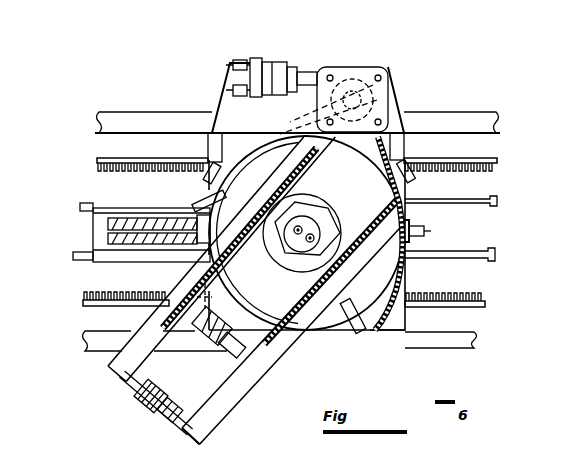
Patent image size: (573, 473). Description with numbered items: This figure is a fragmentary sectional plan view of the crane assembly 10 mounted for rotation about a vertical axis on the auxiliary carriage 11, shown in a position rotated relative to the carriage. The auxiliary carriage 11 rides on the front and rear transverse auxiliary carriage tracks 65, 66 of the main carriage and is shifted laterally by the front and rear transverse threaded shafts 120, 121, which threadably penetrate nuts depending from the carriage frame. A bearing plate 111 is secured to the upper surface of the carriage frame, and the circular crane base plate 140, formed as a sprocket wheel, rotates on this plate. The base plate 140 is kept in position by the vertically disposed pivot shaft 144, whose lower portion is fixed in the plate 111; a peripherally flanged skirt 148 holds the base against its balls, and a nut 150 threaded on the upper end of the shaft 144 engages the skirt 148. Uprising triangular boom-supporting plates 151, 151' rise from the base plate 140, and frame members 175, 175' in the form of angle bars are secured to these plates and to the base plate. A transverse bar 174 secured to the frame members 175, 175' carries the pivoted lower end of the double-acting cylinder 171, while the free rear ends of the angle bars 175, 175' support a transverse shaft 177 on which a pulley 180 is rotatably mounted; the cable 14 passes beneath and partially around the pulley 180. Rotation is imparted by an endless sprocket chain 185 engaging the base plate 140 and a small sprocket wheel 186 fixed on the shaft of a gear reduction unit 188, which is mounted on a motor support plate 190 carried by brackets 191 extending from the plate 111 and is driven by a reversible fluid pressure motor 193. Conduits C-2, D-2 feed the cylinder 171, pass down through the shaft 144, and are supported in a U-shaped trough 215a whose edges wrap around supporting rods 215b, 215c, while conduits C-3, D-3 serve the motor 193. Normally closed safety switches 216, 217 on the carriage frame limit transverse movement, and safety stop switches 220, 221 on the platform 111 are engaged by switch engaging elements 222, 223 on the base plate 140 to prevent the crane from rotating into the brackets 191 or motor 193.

The crane assembly 10 is at (227, 425).
The auxiliary carriage 11 is at (413, 284).
The cable 14 is at (158, 406).
The front auxiliary carriage track 65 is at (129, 118).
The rear auxiliary carriage track 66 is at (80, 334).
The bearing plate 111 is at (406, 317).
The front threaded shaft 120 is at (98, 166).
The rear threaded shaft 121 is at (83, 300).
The circular crane base plate 140 is at (354, 180).
The vertically disposed pivot shaft 144 is at (310, 238).
The peripherally flanged skirt 148 is at (272, 262).
The nut 150 is at (298, 226).
The boom-supporting plate 151 is at (257, 233).
The boom-supporting plate 151' is at (377, 233).
The double-acting cylinder 171 is at (200, 348).
The transverse bar 174 is at (237, 355).
The frame member 175 is at (216, 259).
The frame member 175' is at (293, 321).
The transverse shaft 177 is at (127, 377).
The pulley 180 is at (143, 397).
The endless sprocket chain 185 is at (292, 122).
The sprocket wheel 186 is at (388, 88).
The gear reduction unit 188 is at (356, 70).
The motor support plate 190 is at (220, 101).
The brackets 191 is at (210, 145).
The reversible motor 193 is at (284, 41).
The U-shaped trough 215a is at (110, 208).
The supporting rod 215b is at (86, 205).
The supporting rod 215c is at (80, 256).
The safety switch 216 is at (426, 231).
The safety switch 217 is at (175, 262).
The safety stop switch 220 is at (413, 173).
The safety stop switch 221 is at (204, 173).
The switch engaging element 222 is at (197, 197).
The switch engaging element 223 is at (368, 332).
The conduit C-2 is at (108, 239).
The conduit C-3 is at (234, 61).
The conduit D-2 is at (108, 223).
The conduit D-3 is at (232, 90).